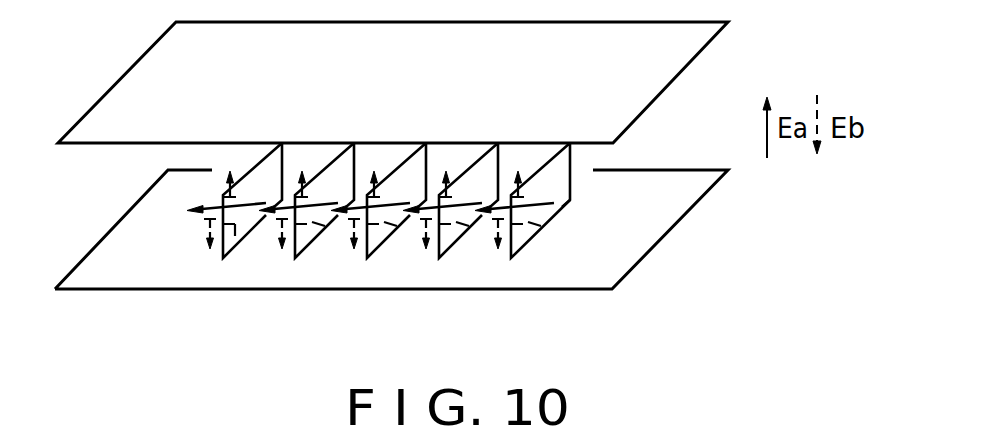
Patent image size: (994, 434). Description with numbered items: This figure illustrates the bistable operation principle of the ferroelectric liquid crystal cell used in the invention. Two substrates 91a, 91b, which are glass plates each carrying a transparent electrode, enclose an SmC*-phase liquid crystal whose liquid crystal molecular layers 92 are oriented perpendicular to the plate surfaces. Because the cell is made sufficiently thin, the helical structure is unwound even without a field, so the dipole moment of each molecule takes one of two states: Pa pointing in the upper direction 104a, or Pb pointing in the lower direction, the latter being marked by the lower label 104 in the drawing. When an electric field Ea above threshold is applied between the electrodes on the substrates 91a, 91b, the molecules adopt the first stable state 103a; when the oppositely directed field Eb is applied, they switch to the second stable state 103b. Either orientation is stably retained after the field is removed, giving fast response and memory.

The substrate 91a is at (713, 41).
The substrate 91b is at (683, 216).
The liquid crystal molecular layers 92 is at (575, 160).
The first stable state 103a is at (257, 198).
The second stable state 103b is at (232, 252).
The upper direction 104a is at (226, 184).
The lower potential point Pb 104 is at (210, 220).